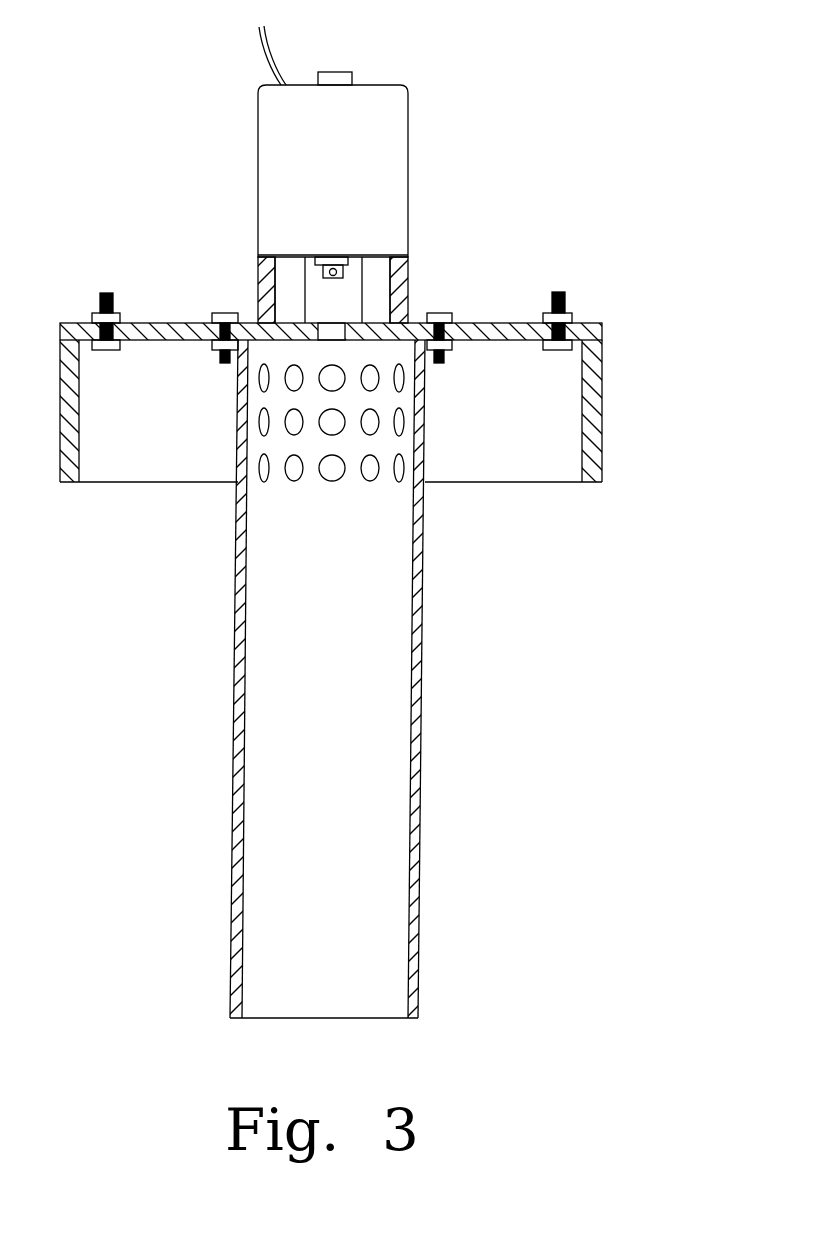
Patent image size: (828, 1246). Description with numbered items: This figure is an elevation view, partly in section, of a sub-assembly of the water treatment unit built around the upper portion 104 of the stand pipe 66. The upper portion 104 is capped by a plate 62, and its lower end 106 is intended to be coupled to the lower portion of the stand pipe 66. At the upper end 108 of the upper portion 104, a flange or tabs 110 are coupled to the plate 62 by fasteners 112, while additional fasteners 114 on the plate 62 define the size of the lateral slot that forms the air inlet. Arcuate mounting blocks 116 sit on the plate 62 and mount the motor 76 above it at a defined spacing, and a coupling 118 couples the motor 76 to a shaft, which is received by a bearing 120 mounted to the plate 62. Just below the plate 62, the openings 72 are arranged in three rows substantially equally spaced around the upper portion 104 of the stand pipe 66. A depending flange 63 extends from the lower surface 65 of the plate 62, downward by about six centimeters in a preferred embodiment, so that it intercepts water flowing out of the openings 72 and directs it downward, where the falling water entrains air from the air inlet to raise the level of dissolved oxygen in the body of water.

The plate 62 is at (505, 327).
The depending flange 63 is at (600, 419).
The lower surface 65 is at (177, 352).
The stand pipe 66 is at (232, 778).
The openings 72 is at (259, 379).
The motor 76 is at (400, 101).
The upper portion 104 is at (422, 623).
The lower end 106 is at (423, 1018).
The upper end 108 is at (422, 384).
The flange or tabs 110 is at (450, 346).
The fasteners 112 is at (223, 313).
The additional fasteners 114 is at (106, 292).
The arcuate mounting blocks 116 is at (403, 262).
The coupling 118 is at (321, 278).
The bearing 120 is at (333, 323).